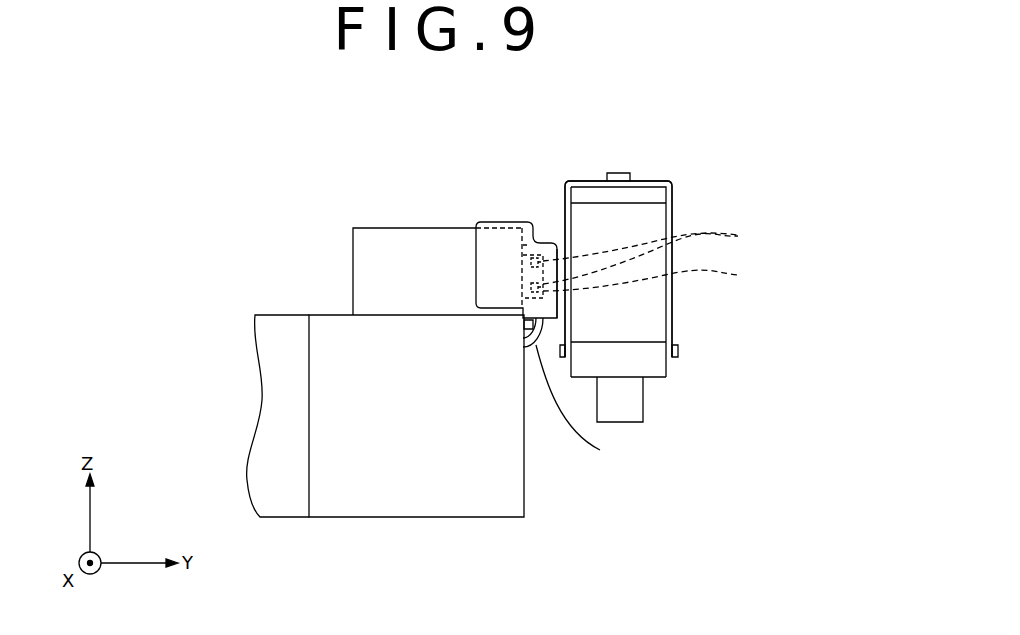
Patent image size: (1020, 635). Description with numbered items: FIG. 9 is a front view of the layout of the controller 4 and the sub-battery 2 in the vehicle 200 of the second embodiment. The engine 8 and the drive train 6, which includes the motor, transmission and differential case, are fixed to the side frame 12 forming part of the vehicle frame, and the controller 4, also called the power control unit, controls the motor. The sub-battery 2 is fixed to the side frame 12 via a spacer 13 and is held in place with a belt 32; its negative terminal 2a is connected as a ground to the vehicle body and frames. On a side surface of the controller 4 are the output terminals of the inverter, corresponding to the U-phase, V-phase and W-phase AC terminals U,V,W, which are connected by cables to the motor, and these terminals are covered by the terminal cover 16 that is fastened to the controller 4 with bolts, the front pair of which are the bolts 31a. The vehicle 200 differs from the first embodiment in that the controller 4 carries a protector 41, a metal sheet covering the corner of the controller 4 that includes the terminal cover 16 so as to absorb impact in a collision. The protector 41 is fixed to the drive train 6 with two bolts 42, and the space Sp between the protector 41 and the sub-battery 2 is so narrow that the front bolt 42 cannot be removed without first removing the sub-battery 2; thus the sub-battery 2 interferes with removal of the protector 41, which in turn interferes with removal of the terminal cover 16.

The vehicle 200 is at (745, 79).
The sub-battery 2 is at (658, 218).
The negative terminal 2a is at (613, 173).
The controller 4 is at (415, 240).
The drive train 6 is at (336, 328).
The engine 8 is at (287, 328).
The side frame 12 is at (647, 410).
The spacer 13 is at (658, 367).
The terminal cover 16 is at (658, 276).
The bolts 31a is at (666, 253).
The belt 32 is at (673, 195).
The protector 41 is at (502, 222).
The bolts 42 is at (543, 323).
The space Sp is at (549, 213).
The U-phase, V-phase and W-phase AC terminals U,V,W is at (600, 450).